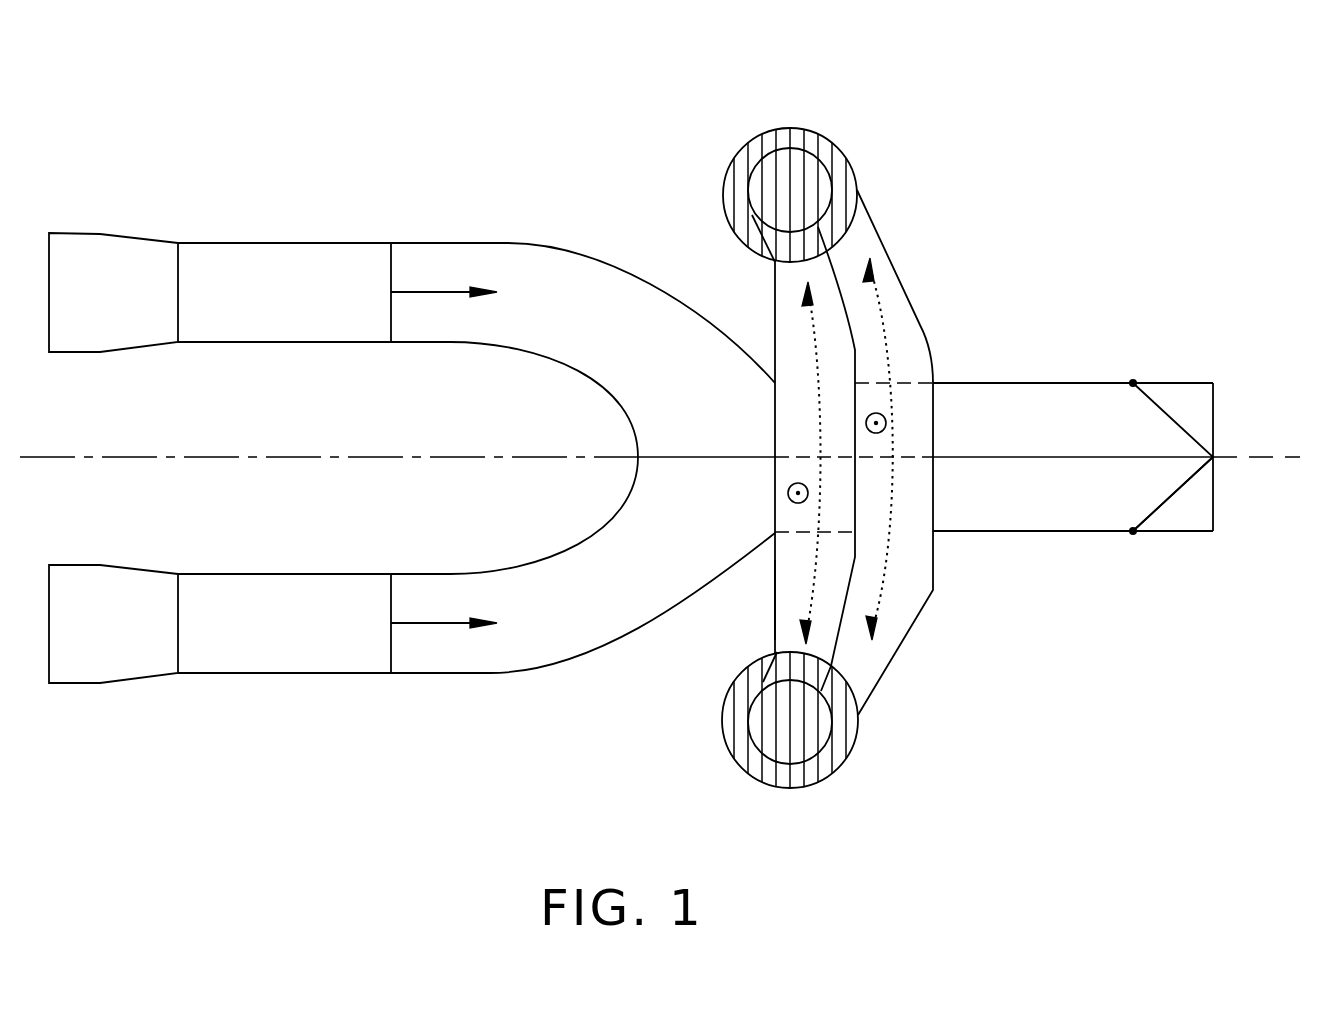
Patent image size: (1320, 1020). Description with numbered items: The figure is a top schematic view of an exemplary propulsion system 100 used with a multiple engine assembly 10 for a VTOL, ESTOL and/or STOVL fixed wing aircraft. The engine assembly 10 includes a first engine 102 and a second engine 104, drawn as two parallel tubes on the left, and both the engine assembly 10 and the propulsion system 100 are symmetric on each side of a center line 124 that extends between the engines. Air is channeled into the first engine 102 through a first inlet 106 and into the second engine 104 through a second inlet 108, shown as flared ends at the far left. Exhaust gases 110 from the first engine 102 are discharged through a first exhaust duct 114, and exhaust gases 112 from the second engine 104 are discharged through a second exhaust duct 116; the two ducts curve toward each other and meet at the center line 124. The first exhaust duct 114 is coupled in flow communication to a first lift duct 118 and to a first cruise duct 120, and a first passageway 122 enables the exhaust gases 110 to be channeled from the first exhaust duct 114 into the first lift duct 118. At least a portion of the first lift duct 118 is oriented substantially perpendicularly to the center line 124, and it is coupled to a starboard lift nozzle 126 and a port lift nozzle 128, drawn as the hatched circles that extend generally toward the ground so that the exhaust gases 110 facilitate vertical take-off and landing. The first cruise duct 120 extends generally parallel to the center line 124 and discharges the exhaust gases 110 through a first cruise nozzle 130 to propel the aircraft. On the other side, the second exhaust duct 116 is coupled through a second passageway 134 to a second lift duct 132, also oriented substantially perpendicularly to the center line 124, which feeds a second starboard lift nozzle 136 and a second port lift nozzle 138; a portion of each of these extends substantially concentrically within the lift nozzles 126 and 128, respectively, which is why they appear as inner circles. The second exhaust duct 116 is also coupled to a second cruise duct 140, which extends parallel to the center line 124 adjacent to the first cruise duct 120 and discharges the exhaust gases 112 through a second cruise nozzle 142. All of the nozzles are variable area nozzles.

The multiple engine assembly 10 is at (106, 104).
The propulsion system 100 is at (414, 162).
The first engine 102 is at (300, 260).
The second engine 104 is at (300, 657).
The first inlet 106 is at (49, 325).
The second inlet 108 is at (49, 590).
The exhaust gases 110 is at (430, 295).
The exhaust gases 112 is at (800, 330).
The first exhaust duct 114 is at (543, 270).
The second exhaust duct 116 is at (553, 645).
The first lift duct 118 is at (915, 355).
The first cruise duct 120 is at (1040, 395).
The first passageway 122 is at (883, 418).
The center line 124 is at (320, 455).
The starboard lift nozzle 126 is at (848, 175).
The port lift nozzle 128 is at (838, 757).
The first cruise nozzle 130 is at (1168, 410).
The second lift duct 132 is at (790, 617).
The second passageway 134 is at (788, 493).
The second starboard lift nozzle 136 is at (782, 167).
The second port lift nozzle 138 is at (770, 745).
The second cruise duct 140 is at (1040, 518).
The second cruise nozzle 142 is at (1172, 497).